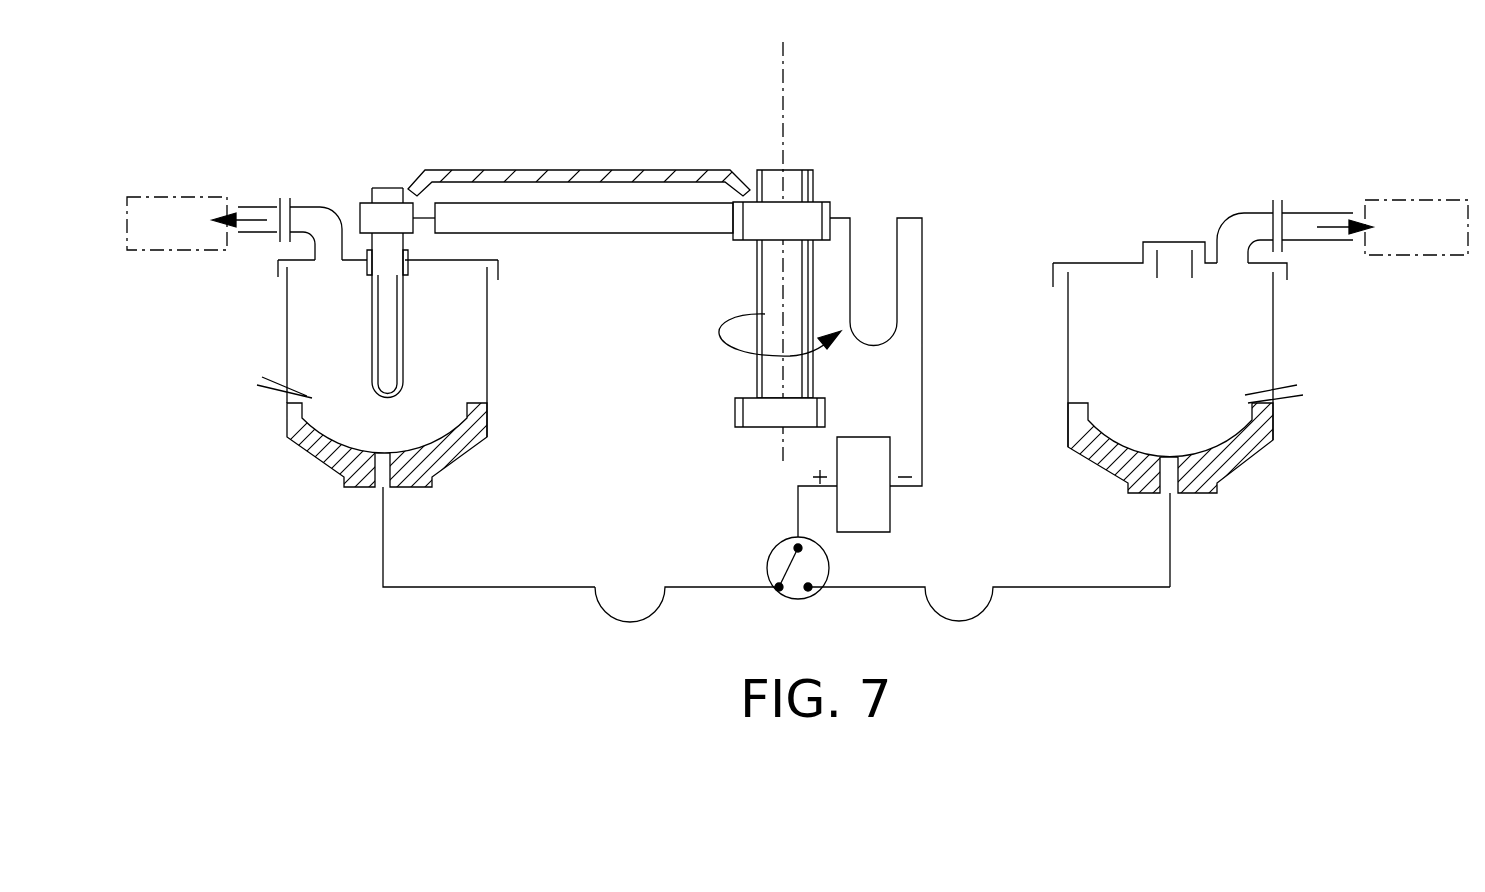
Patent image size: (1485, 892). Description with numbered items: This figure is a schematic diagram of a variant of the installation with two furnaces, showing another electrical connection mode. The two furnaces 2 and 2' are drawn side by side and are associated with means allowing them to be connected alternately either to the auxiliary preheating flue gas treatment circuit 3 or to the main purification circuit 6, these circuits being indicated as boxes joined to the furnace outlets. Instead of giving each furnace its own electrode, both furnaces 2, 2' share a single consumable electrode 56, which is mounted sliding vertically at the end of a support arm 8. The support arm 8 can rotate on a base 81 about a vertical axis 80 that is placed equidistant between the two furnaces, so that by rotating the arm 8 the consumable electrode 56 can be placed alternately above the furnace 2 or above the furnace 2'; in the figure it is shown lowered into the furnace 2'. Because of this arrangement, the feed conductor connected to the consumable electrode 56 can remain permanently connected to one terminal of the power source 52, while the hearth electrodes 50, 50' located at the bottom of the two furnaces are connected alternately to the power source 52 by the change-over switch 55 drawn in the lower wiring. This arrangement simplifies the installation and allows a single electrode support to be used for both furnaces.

The vertical axis 80 is at (786, 72).
The base 81 is at (768, 275).
The support arm 8 is at (641, 215).
The main purification circuit 6 is at (189, 241).
The auxiliary preheating flue gas treatment circuit 3 is at (1431, 244).
The furnace 2' is at (414, 317).
The furnace 2 is at (1213, 323).
The consumable electrode 56 is at (385, 318).
The hearth electrode 50' is at (417, 488).
The hearth electrode 50 is at (1168, 493).
The power source 52 is at (862, 437).
The change-over switch 55 is at (799, 592).